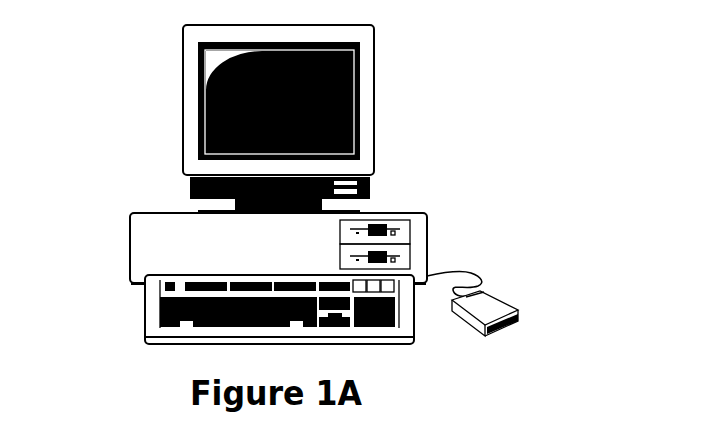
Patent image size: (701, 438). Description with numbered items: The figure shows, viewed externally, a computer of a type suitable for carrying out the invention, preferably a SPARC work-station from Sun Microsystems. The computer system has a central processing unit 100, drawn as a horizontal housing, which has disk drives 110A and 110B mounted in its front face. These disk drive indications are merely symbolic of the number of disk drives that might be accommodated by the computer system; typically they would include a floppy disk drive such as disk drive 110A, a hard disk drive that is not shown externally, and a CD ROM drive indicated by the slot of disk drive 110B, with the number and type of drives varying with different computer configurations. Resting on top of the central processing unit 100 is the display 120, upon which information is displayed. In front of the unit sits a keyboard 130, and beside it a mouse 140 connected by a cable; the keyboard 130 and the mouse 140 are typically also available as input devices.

The central processing unit 100 is at (230, 249).
The disk drive 110A is at (323, 231).
The disk drive 110B is at (323, 256).
The display 120 is at (325, 119).
The keyboard 130 is at (232, 309).
The mouse 140 is at (513, 304).